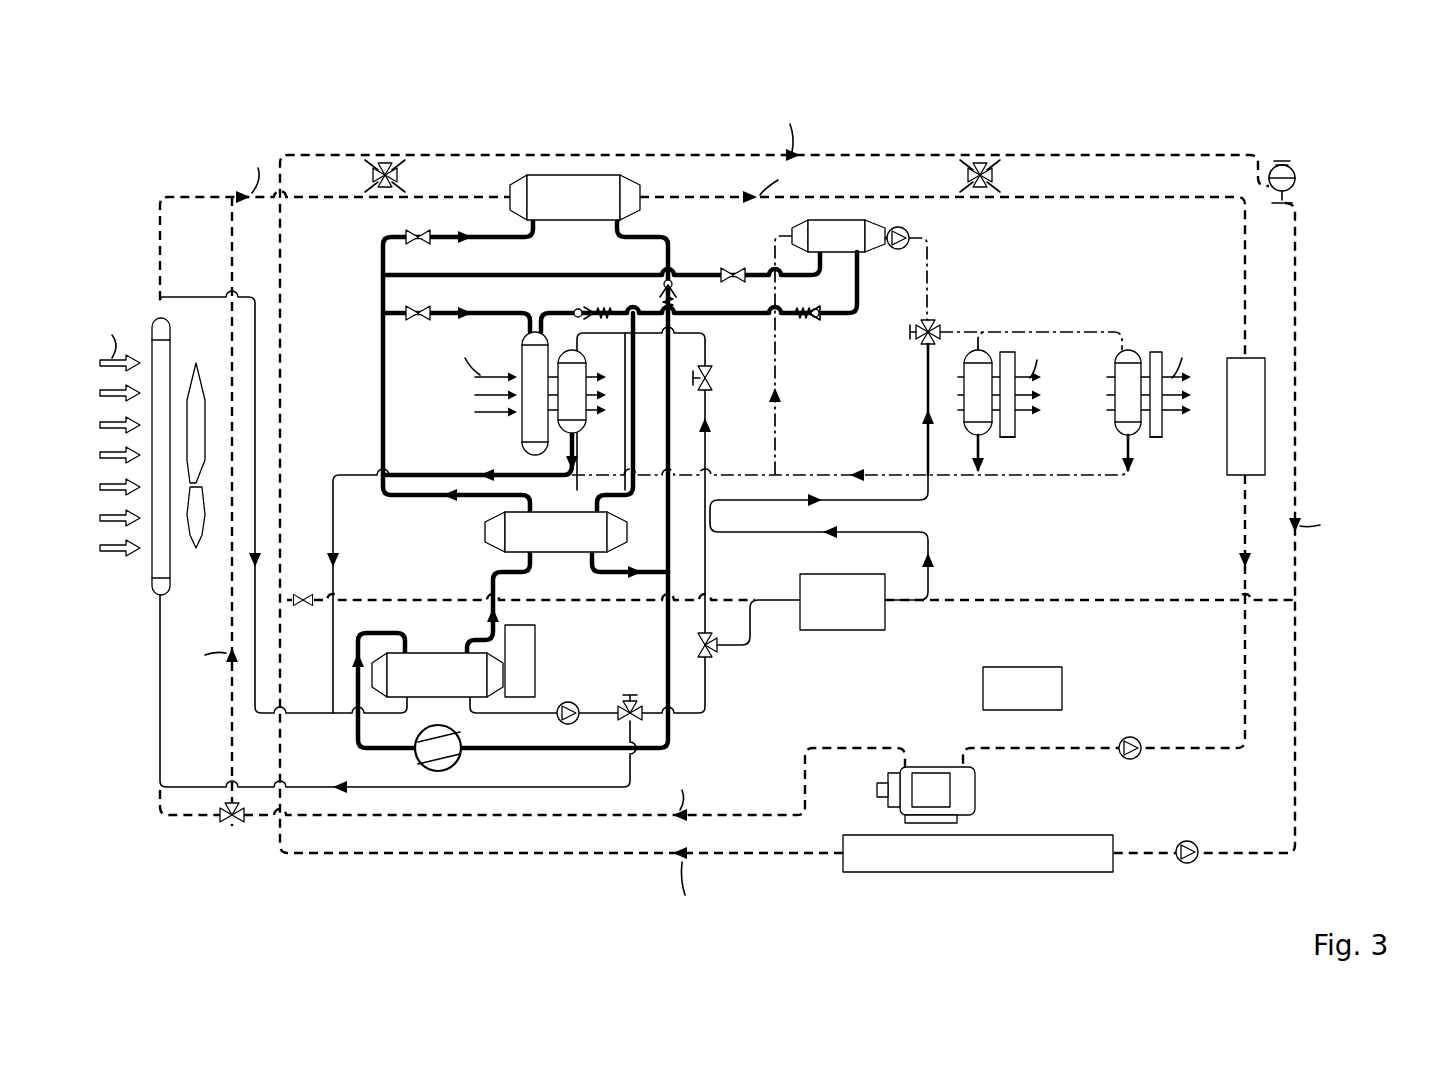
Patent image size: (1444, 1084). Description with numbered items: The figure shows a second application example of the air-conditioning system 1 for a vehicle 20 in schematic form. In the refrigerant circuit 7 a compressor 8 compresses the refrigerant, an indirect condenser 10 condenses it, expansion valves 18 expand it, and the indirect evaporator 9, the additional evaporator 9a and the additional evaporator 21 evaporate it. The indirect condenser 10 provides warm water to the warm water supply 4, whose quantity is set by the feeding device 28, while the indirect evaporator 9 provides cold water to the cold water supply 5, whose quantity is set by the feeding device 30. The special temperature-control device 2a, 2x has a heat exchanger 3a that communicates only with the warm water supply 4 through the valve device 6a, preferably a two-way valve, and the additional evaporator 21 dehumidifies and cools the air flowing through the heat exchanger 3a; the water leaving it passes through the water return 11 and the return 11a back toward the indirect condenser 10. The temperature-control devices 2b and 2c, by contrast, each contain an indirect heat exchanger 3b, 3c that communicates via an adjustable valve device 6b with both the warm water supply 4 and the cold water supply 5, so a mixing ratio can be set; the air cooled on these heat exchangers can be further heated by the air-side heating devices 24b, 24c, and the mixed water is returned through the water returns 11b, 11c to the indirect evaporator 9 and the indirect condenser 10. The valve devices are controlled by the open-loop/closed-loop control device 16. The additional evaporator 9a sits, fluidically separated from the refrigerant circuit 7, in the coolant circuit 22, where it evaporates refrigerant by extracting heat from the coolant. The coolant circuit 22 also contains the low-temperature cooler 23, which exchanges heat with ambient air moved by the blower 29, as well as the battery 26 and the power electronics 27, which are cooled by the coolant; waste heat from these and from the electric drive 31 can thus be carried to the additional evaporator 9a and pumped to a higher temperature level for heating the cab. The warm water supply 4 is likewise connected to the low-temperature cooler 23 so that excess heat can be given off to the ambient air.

The air-conditioning system 1 is at (1320, 130).
The vehicle 20 is at (1374, 164).
The coolant circuit 22 is at (158, 262).
The refrigerant circuit 7 is at (370, 381).
The additional evaporator 9a is at (598, 213).
The indirect evaporator 9 is at (846, 250).
The feeding device 30 is at (896, 250).
The cold water supply 5 is at (945, 243).
The water return 11 is at (437, 470).
The warm water supply 4 is at (914, 378).
The expansion valve 18 is at (412, 232).
The temperature-control device 2a is at (556, 328).
The special temperature-control device 2x is at (577, 394).
The additional evaporator 21 is at (525, 432).
The heat exchanger 3a is at (586, 372).
The outlet line 11a is at (577, 462).
The valve device 6a is at (714, 378).
The valve device 6b is at (940, 325).
The temperature-control device 2b is at (1006, 452).
The heat exchanger 3b is at (982, 425).
The air-side heating device 24b is at (1012, 425).
The water return 11b is at (980, 470).
The temperature-control device 2c is at (1139, 341).
The heat exchanger 3c is at (1118, 372).
The air-side heating device 24c is at (1162, 425).
The water return 11c is at (1128, 472).
The power electronics 27 is at (1263, 423).
The indirect condenser 10 is at (460, 689).
The feeding device 28 is at (568, 702).
The compressor 8 is at (463, 738).
The low-temperature cooler 23 is at (152, 565).
The blower 29 is at (196, 552).
The open-loop/closed-loop control device 16 is at (1065, 685).
The electric drive 31 is at (930, 765).
The battery 26 is at (1002, 868).